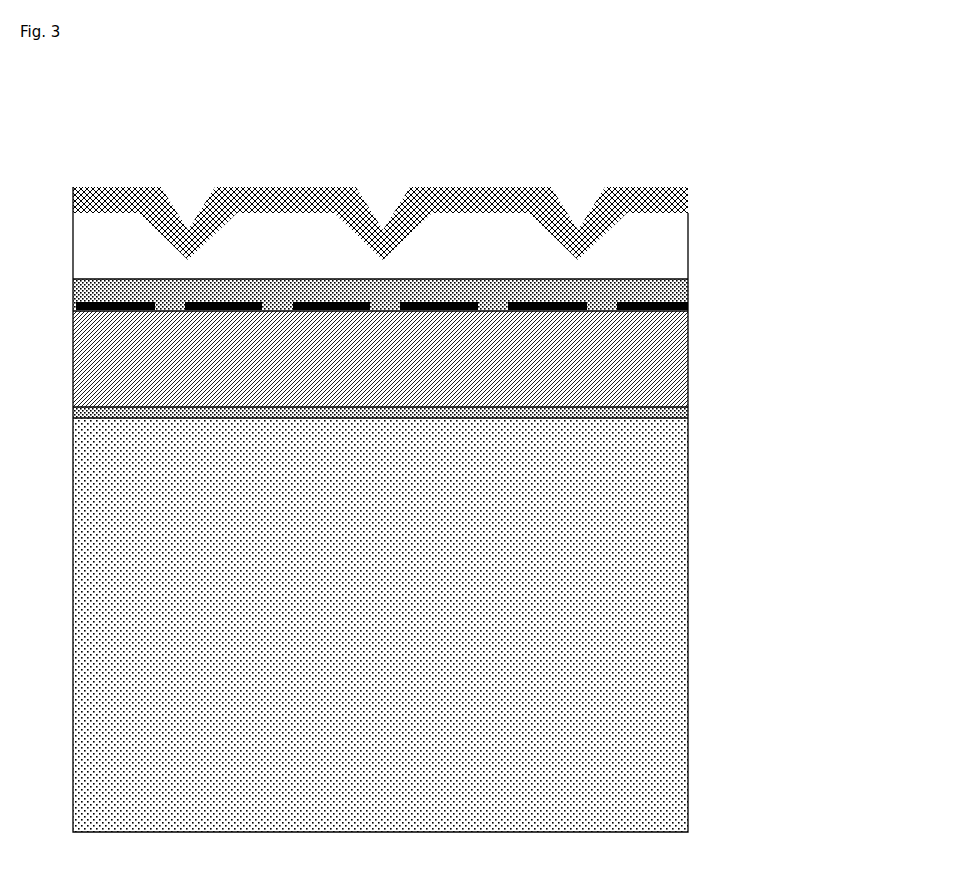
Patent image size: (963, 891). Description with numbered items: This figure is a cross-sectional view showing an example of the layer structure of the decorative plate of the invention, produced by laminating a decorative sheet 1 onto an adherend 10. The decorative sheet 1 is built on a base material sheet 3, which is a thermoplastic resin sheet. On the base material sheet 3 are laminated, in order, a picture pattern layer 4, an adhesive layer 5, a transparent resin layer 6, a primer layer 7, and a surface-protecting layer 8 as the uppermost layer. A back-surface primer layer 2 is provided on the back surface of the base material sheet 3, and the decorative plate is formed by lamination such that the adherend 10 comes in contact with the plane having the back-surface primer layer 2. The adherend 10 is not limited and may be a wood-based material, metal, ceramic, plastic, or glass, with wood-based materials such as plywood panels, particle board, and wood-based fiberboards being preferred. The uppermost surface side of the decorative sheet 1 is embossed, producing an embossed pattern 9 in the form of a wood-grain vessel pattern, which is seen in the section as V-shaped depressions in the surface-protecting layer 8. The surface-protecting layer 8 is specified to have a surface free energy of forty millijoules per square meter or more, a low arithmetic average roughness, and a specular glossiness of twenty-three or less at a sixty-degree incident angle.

The decorative sheet 1 is at (843, 158).
The back-surface primer layer 2 is at (688, 408).
The base material sheet 3 is at (688, 353).
The picture pattern layer 4 is at (688, 308).
The adhesive layer 5 is at (688, 284).
The transparent resin layer 6 is at (688, 248).
The primer layer 7 is at (688, 210).
The surface-protecting layer 8 is at (688, 193).
The embossed pattern 9 is at (190, 212).
The adherend 10 is at (685, 633).